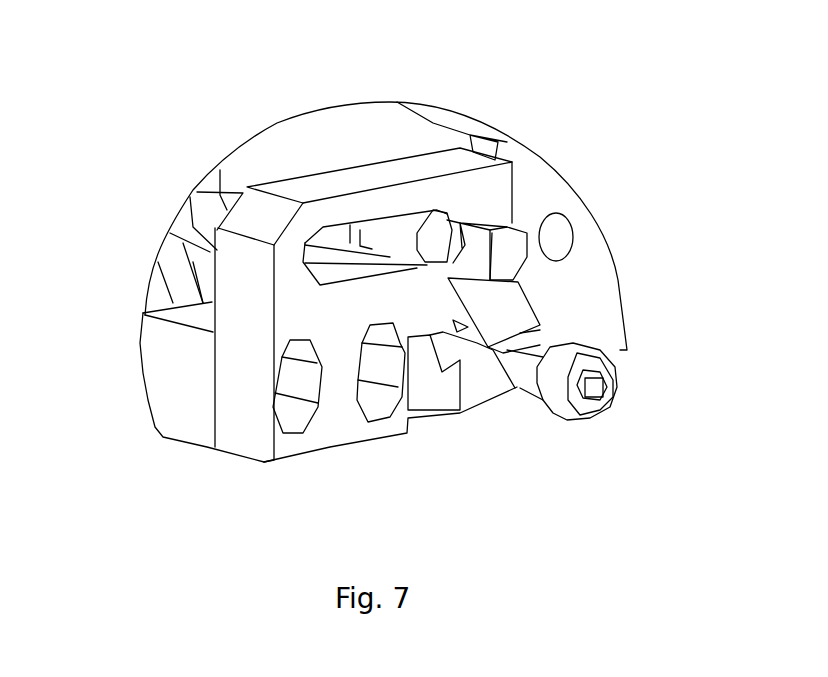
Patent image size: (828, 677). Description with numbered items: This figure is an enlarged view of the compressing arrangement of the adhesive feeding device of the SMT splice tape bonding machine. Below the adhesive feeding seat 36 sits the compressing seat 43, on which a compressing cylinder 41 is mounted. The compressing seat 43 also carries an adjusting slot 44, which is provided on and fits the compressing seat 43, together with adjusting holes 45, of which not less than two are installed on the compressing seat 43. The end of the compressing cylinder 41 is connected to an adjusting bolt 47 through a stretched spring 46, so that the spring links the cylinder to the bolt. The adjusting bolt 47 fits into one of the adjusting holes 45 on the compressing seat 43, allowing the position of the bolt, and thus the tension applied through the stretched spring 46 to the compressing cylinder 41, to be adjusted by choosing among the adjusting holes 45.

The adhesive feeding seat 36 is at (360, 140).
The compressing cylinder 41 is at (215, 217).
The compressing seat 43 is at (232, 360).
The adjusting slot 44 is at (343, 268).
The adjusting holes 45 is at (295, 380).
The stretched spring 46 is at (503, 317).
The adjusting bolt 47 is at (553, 387).